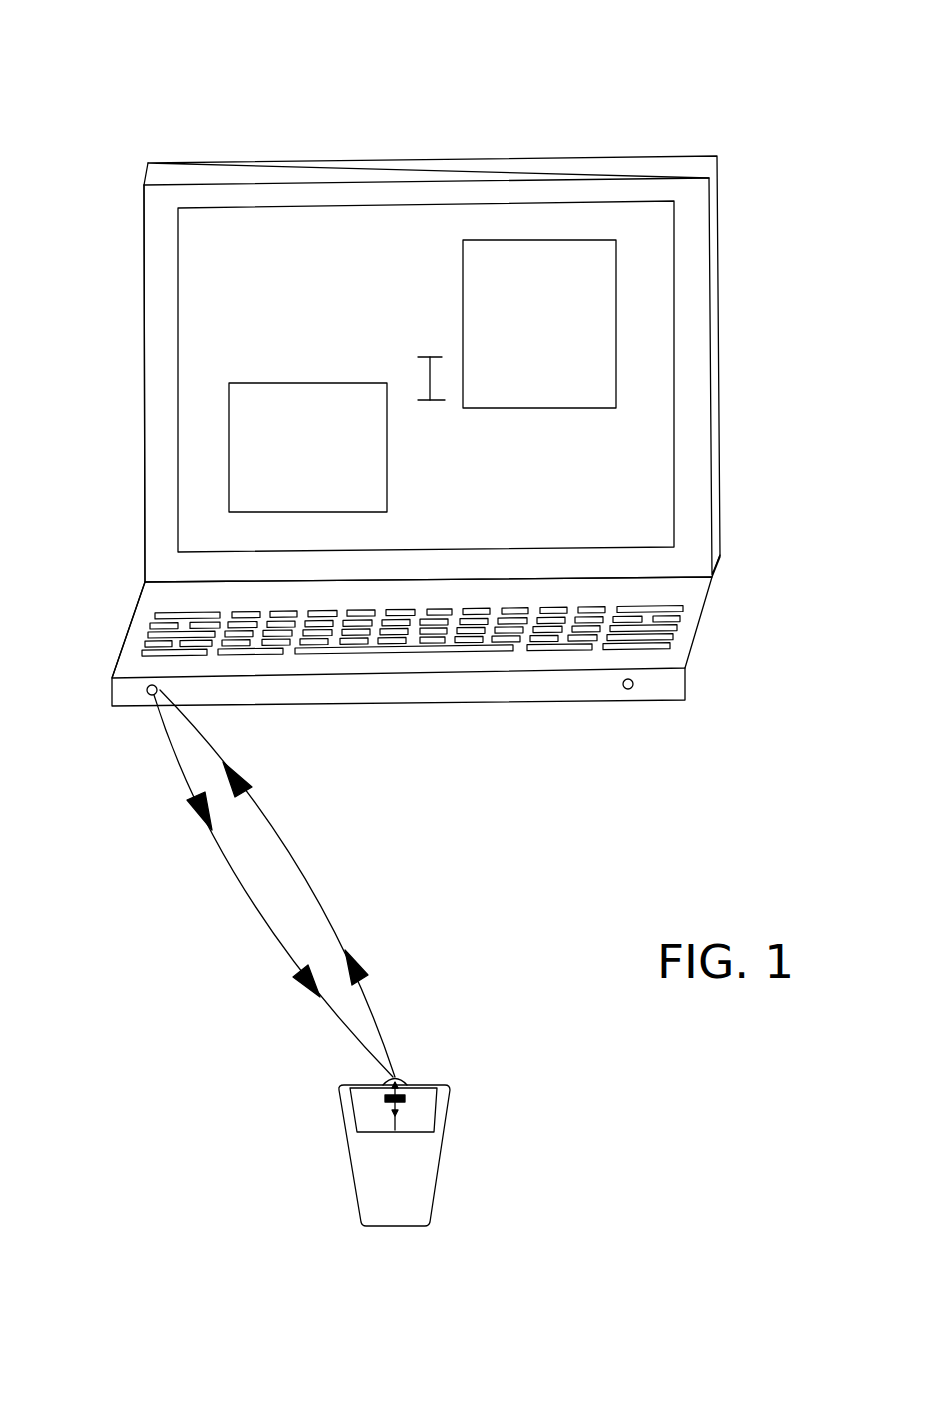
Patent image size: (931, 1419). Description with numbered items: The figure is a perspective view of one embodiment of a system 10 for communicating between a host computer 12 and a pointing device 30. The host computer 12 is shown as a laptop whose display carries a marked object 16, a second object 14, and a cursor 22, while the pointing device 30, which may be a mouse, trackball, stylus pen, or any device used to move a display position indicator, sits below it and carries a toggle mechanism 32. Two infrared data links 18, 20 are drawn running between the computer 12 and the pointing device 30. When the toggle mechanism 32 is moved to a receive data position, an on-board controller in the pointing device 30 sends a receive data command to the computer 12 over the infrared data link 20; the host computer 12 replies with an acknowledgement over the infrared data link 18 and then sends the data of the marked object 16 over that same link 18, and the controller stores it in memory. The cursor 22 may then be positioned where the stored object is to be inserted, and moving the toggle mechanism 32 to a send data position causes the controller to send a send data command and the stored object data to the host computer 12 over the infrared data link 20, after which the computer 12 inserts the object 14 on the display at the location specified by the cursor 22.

The system 10 is at (822, 24).
The host computer 12 is at (438, 175).
The object 14 is at (254, 431).
The marked object 16 is at (592, 291).
The infrared data link 18 is at (260, 915).
The infrared data link 20 is at (262, 810).
The cursor 22 is at (422, 356).
The pointing device 30 is at (388, 1172).
The toggle mechanism 32 is at (387, 1098).